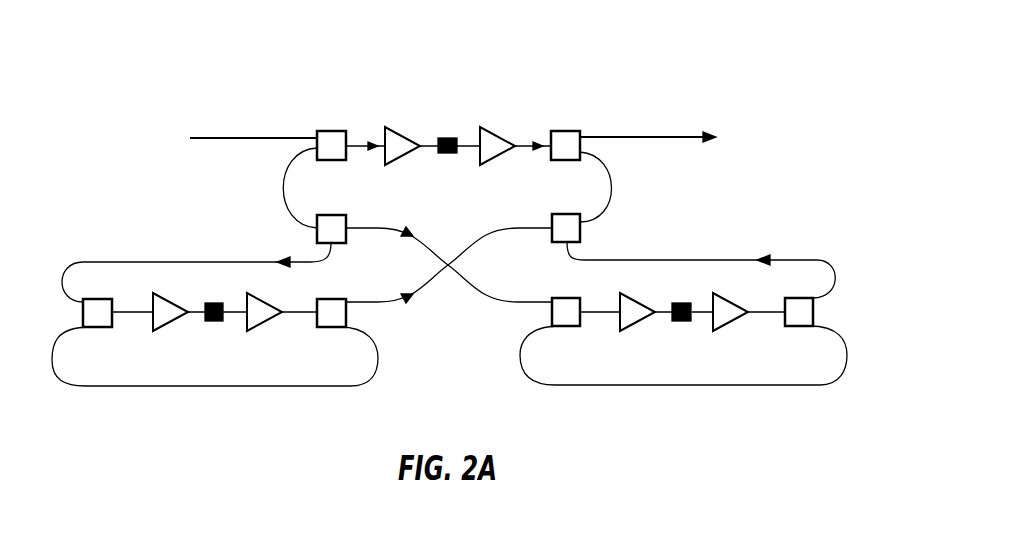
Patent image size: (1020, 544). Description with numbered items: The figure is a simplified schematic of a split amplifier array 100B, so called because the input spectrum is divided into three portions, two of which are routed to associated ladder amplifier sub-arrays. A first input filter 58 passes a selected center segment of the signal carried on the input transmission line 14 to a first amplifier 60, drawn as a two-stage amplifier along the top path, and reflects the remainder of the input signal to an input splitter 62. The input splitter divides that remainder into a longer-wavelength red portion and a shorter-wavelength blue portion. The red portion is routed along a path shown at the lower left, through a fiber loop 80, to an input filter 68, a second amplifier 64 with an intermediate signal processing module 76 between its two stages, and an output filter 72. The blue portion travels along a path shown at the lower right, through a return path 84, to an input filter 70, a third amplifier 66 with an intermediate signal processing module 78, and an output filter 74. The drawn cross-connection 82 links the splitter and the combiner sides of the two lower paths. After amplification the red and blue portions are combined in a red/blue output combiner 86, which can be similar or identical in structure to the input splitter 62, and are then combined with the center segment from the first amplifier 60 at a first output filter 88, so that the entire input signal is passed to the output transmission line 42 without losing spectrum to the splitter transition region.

The split amplifier array 100B is at (397, 66).
The input transmission line 14 is at (243, 137).
The first input filter 58 is at (333, 130).
The first amplifier 60 is at (458, 96).
The first output filter 88 is at (567, 130).
The output transmission line 42 is at (663, 137).
The input splitter 62 is at (333, 215).
The cross-coupled fiber connection 82 is at (475, 242).
The red/blue output combiner 86 is at (565, 213).
The return fiber loop 84 is at (653, 260).
The fiber loop 80 is at (205, 387).
The input filter 68 is at (100, 328).
The second amplifier 64 is at (228, 336).
The intermediate signal processing module 76 is at (212, 323).
The output filter 72 is at (328, 327).
The input filter 70 is at (565, 327).
The third amplifier 66 is at (669, 336).
The intermediate signal processing module 78 is at (682, 323).
The output filter 74 is at (795, 327).